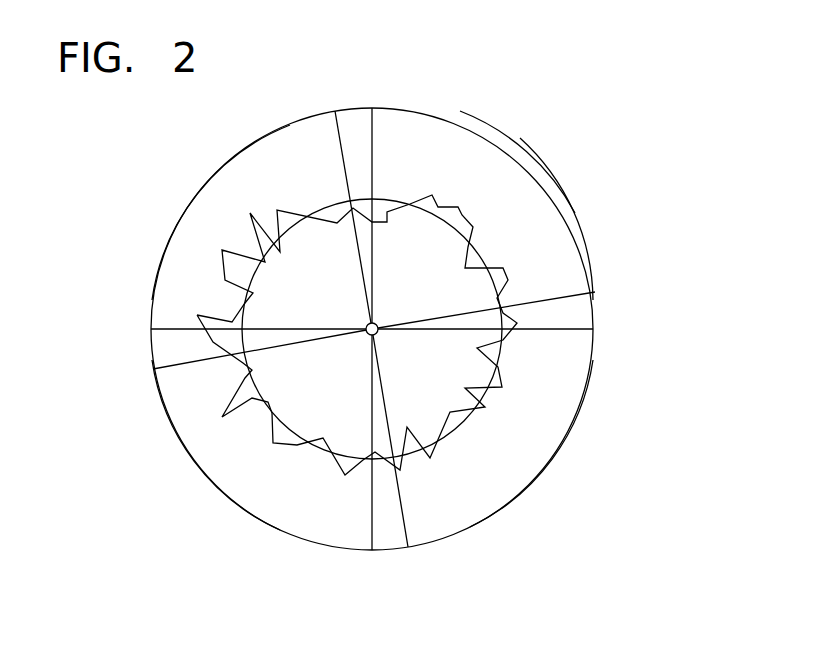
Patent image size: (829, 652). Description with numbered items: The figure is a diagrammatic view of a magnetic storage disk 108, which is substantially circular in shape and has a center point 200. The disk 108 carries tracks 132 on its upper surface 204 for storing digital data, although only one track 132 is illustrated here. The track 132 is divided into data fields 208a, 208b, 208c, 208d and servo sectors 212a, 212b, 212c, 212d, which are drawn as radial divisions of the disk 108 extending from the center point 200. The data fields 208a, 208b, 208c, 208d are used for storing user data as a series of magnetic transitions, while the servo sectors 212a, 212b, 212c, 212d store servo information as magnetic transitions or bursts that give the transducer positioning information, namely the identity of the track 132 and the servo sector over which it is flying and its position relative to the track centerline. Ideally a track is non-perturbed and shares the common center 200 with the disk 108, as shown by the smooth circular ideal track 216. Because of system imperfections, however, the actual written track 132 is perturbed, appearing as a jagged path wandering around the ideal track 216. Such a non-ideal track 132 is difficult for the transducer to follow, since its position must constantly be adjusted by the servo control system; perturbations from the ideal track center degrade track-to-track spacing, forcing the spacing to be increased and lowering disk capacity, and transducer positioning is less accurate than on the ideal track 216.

The upper surface 204 is at (482, 131).
The disk 108 is at (532, 175).
The data field 208a is at (558, 208).
The data field 208b is at (545, 452).
The data field 208c is at (191, 448).
The data field 208d is at (208, 198).
The servo sector 212a is at (354, 115).
The servo sector 212b is at (599, 311).
The servo sector 212c is at (397, 542).
The servo sector 212d is at (155, 348).
The ideal track 216 is at (323, 207).
The track 132 is at (225, 267).
The center point 200 is at (378, 322).